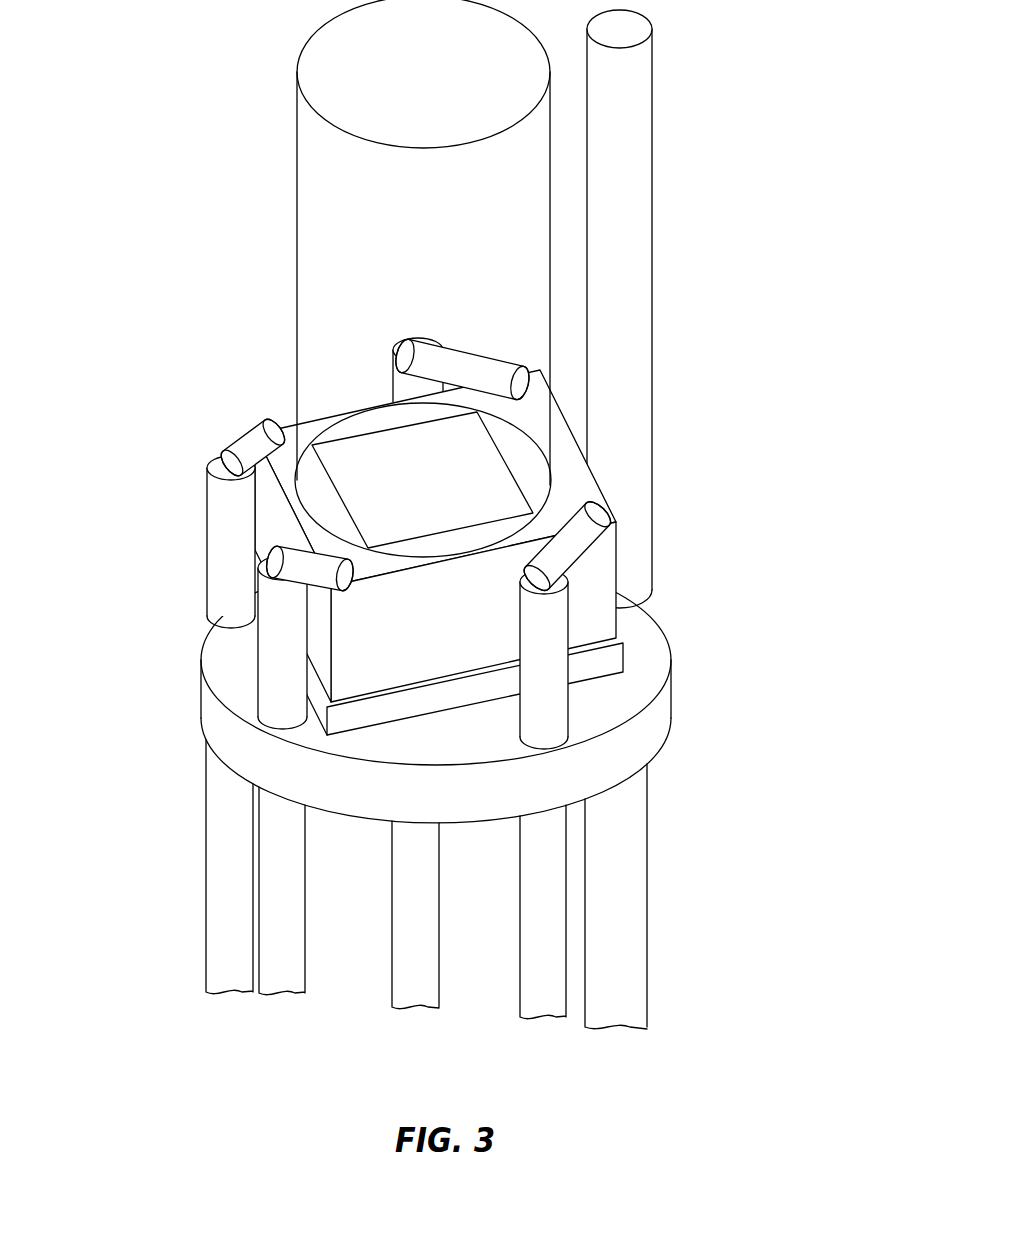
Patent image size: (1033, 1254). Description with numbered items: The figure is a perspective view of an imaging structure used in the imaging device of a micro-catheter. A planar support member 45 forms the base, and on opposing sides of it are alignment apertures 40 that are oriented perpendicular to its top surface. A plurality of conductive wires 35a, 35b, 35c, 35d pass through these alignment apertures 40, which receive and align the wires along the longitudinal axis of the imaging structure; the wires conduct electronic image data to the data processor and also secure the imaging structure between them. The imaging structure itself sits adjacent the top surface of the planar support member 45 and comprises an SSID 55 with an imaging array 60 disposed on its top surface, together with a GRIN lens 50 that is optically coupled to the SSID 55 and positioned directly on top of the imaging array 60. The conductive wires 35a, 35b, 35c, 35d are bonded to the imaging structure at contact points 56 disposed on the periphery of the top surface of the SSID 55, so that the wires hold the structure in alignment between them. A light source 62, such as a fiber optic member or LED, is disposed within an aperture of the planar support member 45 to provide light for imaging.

The conductive wire 35a is at (545, 668).
The conductive wire 35b is at (408, 382).
The conductive wire 35c is at (280, 899).
The conductive wire 35d is at (223, 537).
The alignment aperture 40 is at (300, 693).
The planar support member 45 is at (216, 642).
The GRIN lens 50 is at (297, 100).
The SSID 55 is at (592, 590).
The contact point 56 is at (547, 390).
The imaging array 60 is at (460, 468).
The light source 62 is at (630, 205).